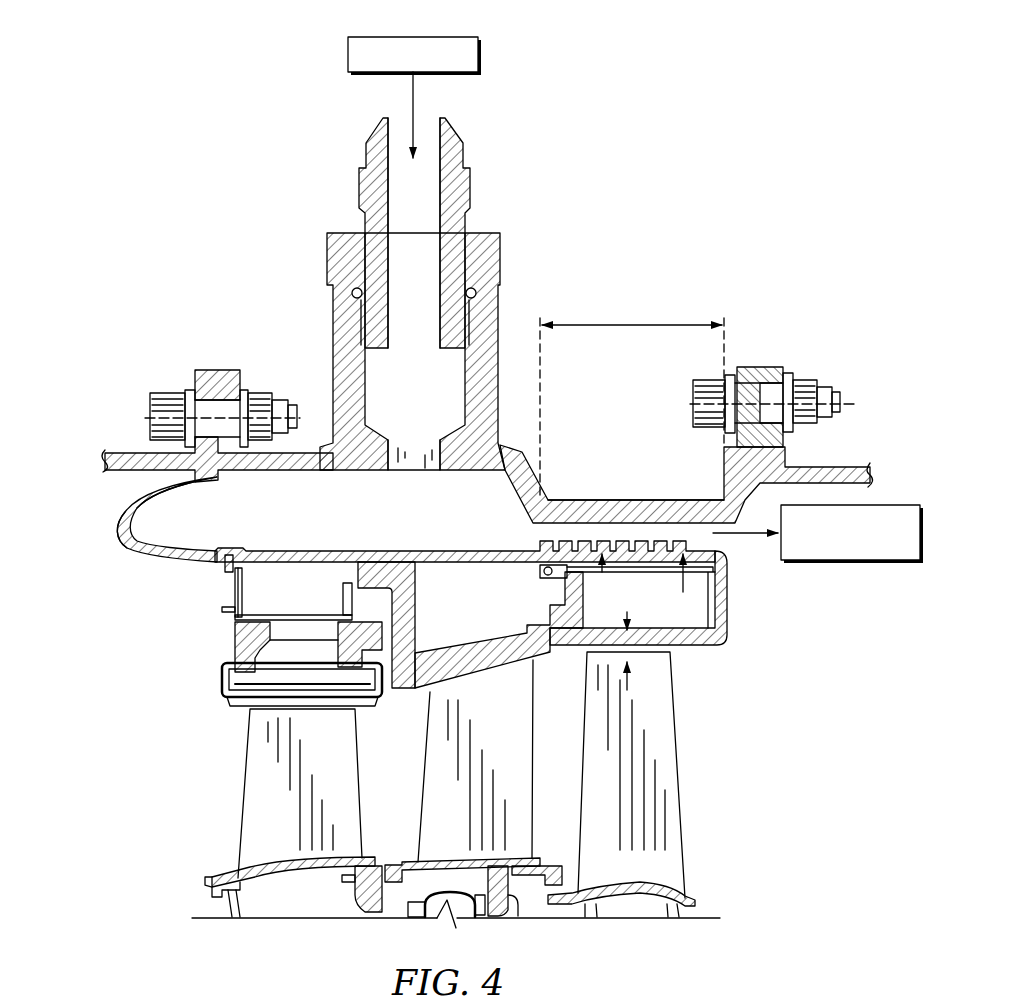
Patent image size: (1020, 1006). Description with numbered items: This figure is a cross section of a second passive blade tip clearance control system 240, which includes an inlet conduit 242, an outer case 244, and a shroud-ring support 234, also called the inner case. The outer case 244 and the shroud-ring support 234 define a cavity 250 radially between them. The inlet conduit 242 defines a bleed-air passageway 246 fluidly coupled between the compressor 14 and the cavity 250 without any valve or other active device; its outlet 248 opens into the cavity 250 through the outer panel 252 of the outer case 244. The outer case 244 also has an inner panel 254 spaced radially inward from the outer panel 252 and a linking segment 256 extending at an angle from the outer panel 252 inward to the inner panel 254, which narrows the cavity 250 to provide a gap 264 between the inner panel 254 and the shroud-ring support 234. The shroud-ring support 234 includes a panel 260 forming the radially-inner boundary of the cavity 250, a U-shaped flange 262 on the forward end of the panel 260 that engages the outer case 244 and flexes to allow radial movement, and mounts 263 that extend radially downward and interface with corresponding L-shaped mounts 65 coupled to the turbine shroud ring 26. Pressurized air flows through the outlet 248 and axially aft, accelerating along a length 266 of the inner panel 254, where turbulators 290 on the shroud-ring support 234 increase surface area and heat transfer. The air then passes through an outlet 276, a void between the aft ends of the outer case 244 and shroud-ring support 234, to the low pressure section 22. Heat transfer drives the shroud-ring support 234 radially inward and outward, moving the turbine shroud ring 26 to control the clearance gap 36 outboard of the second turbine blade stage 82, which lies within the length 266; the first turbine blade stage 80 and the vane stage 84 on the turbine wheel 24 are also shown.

The compressor 14 is at (398, 35).
The low pressure section 22 is at (890, 505).
The turbine wheel 24 is at (150, 838).
The turbine shroud ring 26 is at (157, 629).
The clearance gap 36 is at (627, 690).
The mounts 65 is at (332, 598).
The first turbine blade stage 80 is at (319, 790).
The second turbine blade stage 82 is at (656, 812).
The vane stage 84 is at (499, 800).
The shroud-ring support 234 is at (102, 537).
The passive blade tip clearance control system 240 is at (236, 288).
The inlet conduit 242 is at (305, 228).
The outer case 244 is at (253, 358).
The bleed-air passageway 246 is at (420, 272).
The outlet 248 is at (425, 480).
The cavity 250 is at (320, 500).
The outer panel 252 is at (346, 480).
The inner panel 254 is at (596, 493).
The linking segment 256 is at (550, 474).
The panel 260 is at (336, 540).
The flange 262 is at (133, 552).
The mounts 263 is at (528, 579).
The gap 264 is at (700, 598).
The length 266 is at (610, 322).
The outlet 276 is at (721, 546).
The turbulators 290 is at (600, 570).